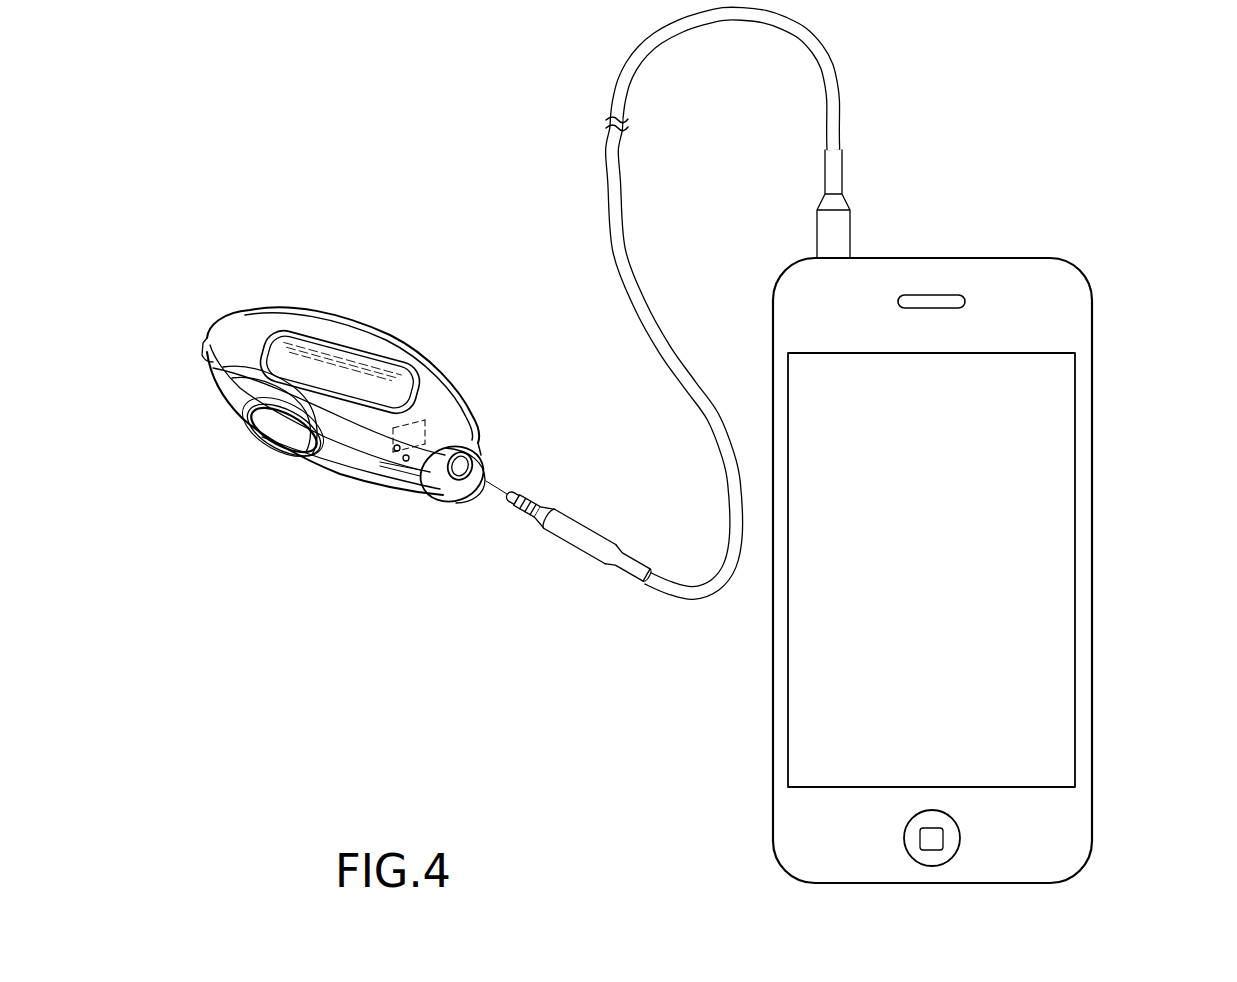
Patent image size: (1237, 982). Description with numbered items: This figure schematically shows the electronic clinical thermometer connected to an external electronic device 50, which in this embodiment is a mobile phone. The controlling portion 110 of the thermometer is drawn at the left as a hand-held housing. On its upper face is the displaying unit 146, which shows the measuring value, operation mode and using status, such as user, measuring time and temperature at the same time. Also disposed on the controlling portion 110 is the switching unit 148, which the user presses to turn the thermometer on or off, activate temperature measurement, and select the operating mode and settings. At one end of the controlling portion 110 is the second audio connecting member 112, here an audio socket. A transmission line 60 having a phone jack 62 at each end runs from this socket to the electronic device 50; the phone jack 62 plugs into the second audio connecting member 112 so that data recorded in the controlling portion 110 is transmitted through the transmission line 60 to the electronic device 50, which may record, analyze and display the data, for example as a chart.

The electronic device 50 is at (1085, 570).
The transmission line 60 is at (607, 173).
The phone jack 62 is at (540, 497).
The controlling portion 110 is at (361, 361).
The second audio connecting member 112 is at (470, 462).
The displaying unit 146 is at (323, 347).
The switching unit 148 is at (280, 427).